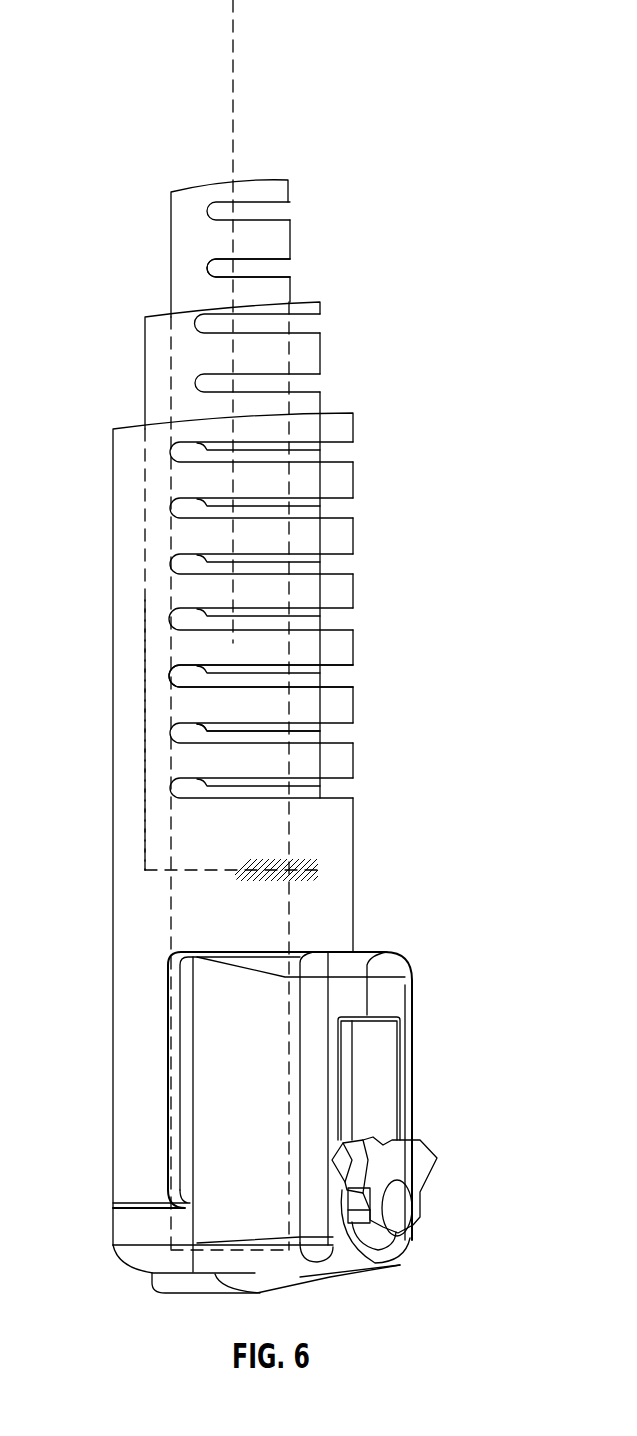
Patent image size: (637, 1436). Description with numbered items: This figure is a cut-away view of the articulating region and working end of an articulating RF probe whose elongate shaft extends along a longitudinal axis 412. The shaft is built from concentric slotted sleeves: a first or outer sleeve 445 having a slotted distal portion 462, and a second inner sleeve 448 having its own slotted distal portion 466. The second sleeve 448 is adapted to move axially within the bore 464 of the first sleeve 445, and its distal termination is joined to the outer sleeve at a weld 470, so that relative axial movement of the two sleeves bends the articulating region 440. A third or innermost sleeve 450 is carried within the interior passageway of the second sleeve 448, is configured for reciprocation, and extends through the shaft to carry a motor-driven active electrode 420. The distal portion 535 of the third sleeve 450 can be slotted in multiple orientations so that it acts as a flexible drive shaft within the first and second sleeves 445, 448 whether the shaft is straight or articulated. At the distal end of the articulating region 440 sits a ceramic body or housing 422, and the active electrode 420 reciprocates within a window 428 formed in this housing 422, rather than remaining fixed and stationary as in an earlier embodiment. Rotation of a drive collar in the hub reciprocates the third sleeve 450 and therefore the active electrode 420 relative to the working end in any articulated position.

The longitudinal axis 412 is at (233, 115).
The active electrode 420 is at (432, 1167).
The ceramic housing 422 is at (397, 1002).
The window 428 is at (385, 1067).
The articulating region 440 is at (412, 632).
The first sleeve 445 is at (123, 513).
The second sleeve 448 is at (155, 370).
The third sleeve 450 is at (181, 246).
The slotted distal portion 462 is at (343, 705).
The bore 464 is at (143, 832).
The slotted distal portion 466 is at (310, 740).
The weld 470 is at (320, 871).
The distal portion 535 is at (275, 268).